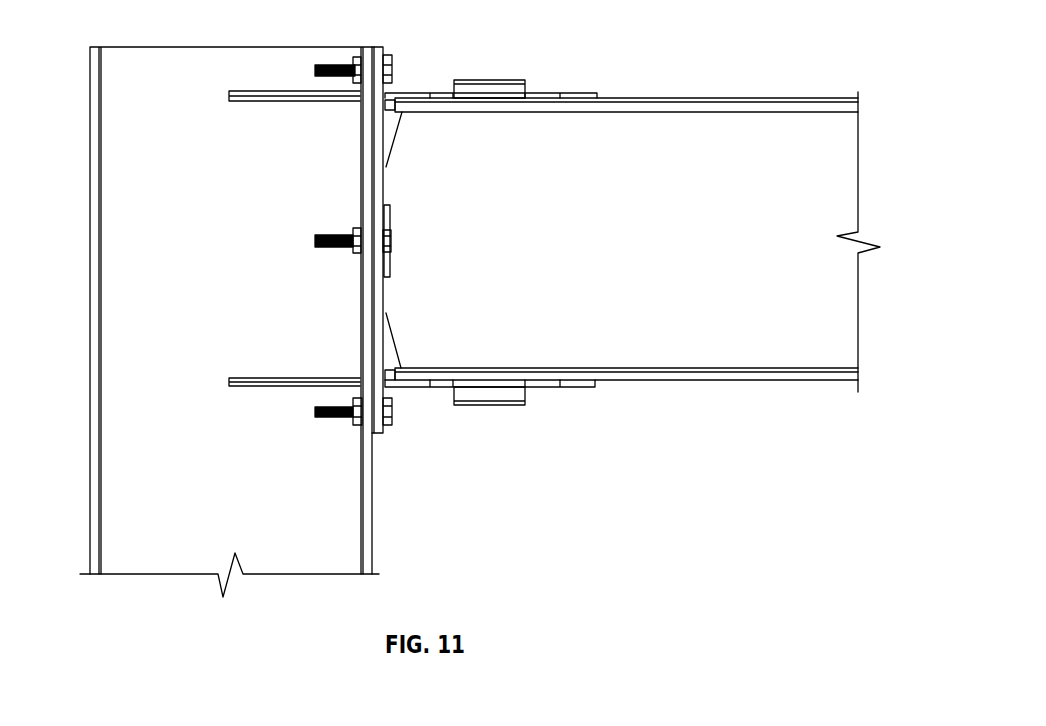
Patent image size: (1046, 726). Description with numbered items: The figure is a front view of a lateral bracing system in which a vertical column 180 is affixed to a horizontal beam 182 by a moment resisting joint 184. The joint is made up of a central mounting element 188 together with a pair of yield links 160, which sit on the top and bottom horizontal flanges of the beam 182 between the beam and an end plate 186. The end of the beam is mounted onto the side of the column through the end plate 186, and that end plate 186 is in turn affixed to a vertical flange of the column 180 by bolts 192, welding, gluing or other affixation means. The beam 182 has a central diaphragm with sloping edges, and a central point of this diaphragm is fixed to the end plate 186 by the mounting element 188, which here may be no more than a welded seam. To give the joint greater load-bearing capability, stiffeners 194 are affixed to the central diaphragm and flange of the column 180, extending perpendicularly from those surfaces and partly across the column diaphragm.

The yield links 160 is at (515, 82).
The vertical column 180 is at (224, 301).
The horizontal beam 182 is at (749, 233).
The moment resisting joint 184 is at (413, 422).
The end plate 186 is at (385, 48).
The mounting element 188 is at (392, 212).
The bolts 192 is at (348, 62).
The stiffeners 194 is at (246, 98).